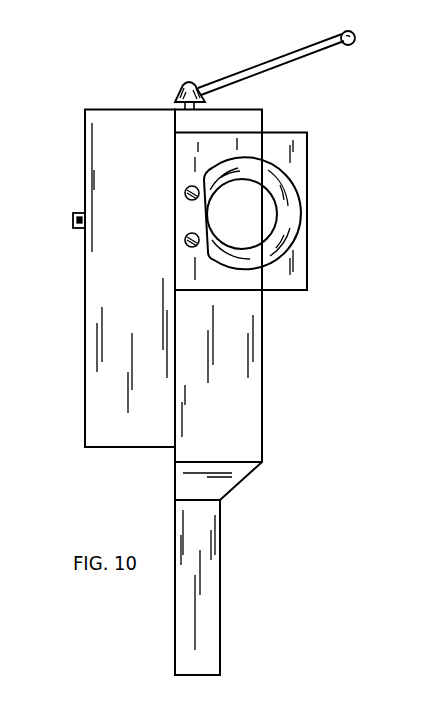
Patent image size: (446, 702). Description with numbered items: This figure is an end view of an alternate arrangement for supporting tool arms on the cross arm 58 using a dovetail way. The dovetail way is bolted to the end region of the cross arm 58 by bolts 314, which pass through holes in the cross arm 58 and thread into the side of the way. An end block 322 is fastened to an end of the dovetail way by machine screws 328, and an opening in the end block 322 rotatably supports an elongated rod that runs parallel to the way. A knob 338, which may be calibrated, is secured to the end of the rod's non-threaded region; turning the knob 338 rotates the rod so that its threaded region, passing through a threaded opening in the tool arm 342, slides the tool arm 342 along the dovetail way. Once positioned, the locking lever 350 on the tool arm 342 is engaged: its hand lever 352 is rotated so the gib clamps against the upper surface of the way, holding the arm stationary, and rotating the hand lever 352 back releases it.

The cross arm 58 is at (138, 278).
The bolts 314 is at (73, 221).
The end block 322 is at (296, 114).
The machine screws 328 is at (185, 191).
The knob 338 is at (260, 226).
The tool arm 342 is at (237, 437).
The locking lever 350 is at (226, 79).
The hand lever 352 is at (328, 36).